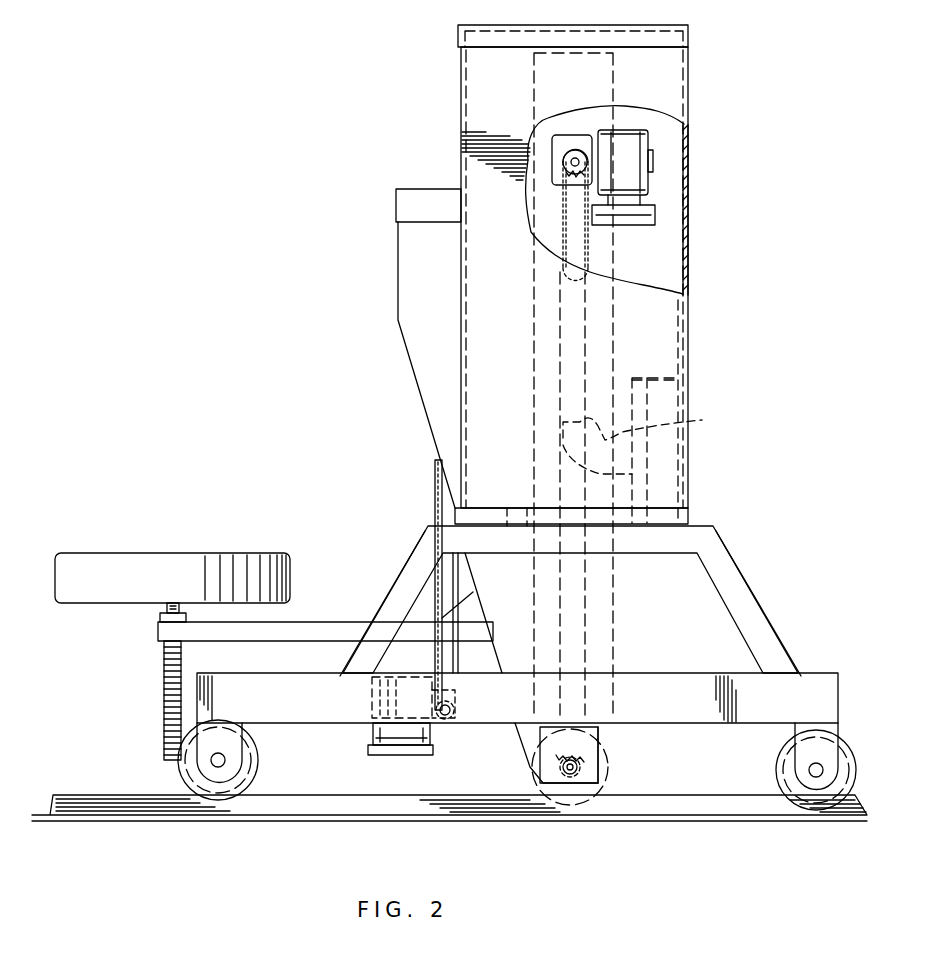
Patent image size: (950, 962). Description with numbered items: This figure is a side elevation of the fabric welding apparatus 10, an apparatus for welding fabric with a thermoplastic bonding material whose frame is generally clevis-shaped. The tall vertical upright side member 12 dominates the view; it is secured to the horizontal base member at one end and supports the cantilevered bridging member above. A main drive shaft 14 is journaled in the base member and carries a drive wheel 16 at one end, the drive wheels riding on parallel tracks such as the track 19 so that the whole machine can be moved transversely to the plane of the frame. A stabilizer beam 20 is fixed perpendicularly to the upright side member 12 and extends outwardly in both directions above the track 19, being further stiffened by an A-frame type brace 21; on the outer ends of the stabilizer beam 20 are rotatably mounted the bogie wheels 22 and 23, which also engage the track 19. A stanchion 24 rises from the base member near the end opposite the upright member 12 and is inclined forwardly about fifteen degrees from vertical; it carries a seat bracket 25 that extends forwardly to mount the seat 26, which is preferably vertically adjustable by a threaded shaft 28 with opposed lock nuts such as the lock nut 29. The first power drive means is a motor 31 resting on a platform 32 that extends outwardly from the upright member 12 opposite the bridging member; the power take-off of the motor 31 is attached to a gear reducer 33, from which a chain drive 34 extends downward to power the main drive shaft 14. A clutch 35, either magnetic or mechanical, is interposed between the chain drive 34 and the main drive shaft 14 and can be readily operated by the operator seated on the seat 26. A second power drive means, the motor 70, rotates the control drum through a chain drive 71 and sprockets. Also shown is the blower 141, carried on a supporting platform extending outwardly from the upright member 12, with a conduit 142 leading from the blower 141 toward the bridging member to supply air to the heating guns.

The apparatus 10 is at (447, 124).
The upright side member 12 is at (533, 328).
The main drive shaft 14 is at (570, 768).
The drive wheel 16 is at (604, 790).
The track means 19 is at (342, 806).
The stabilizer beam 20 is at (250, 674).
The A-frame type brace 21 is at (425, 555).
The bogie wheel 22 is at (258, 758).
The bogie wheel 23 is at (778, 760).
The stanchion 24 is at (422, 393).
The seat bracket 25 is at (308, 627).
The seat 26 is at (165, 553).
The threaded shaft 28 is at (164, 675).
The lock nut 29 is at (160, 617).
The motor 31 is at (650, 150).
The platform 32 is at (655, 225).
The gear reducer 33 is at (575, 136).
The chain drive 34 is at (592, 245).
The clutch 35 is at (602, 757).
The motor 70 is at (372, 734).
The chain drive 71 is at (432, 597).
The blower 141 is at (663, 394).
The conduit 142 is at (654, 441).